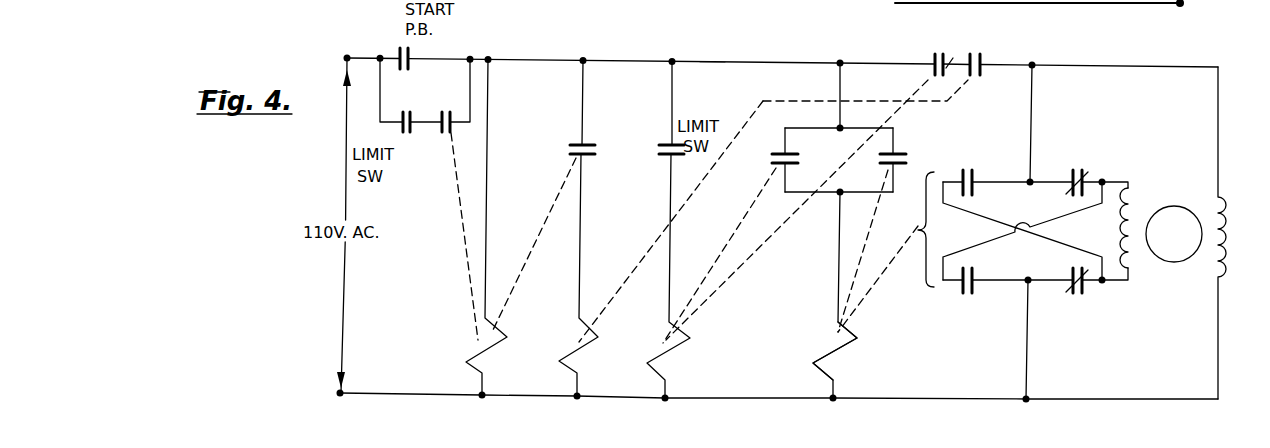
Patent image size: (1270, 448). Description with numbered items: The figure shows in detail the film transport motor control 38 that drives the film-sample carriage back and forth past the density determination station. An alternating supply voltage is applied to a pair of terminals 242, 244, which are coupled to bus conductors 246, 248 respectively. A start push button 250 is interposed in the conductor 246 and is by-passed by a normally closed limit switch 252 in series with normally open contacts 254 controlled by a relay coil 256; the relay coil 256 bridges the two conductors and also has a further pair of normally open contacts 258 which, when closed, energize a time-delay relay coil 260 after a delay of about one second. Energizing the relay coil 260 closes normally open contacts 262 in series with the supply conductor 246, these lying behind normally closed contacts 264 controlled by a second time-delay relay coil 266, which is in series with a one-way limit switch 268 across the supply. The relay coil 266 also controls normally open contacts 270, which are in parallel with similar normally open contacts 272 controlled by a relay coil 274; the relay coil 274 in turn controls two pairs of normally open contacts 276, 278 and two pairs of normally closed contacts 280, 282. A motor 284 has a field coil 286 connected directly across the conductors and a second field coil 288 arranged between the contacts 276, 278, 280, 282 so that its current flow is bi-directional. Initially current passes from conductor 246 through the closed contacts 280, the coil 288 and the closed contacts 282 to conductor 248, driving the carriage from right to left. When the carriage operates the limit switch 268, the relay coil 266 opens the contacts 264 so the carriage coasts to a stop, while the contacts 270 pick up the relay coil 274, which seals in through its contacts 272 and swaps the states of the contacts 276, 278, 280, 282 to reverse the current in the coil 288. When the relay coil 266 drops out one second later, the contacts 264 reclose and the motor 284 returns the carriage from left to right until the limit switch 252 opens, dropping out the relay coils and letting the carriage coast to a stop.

The film transport motor control 38 is at (711, 56).
The terminal 242 is at (345, 55).
The terminal 244 is at (337, 390).
The bus conductor 246 is at (615, 58).
The bus conductor 248 is at (722, 400).
The start push button 250 is at (411, 51).
The limit switch 252 is at (396, 134).
The normally open contacts 254 is at (441, 128).
The relay coil 256 is at (466, 362).
The normally open contacts 258 is at (575, 142).
The relay coil 260 is at (557, 362).
The normally open contacts 262 is at (982, 62).
The normally closed contacts 264 is at (930, 60).
The relay coil 266 is at (677, 351).
The limit switch 268 is at (662, 157).
The normally open contacts 270 is at (791, 153).
The normally open contacts 272 is at (901, 153).
The relay coil 274 is at (838, 352).
The normally open contacts 276 is at (975, 177).
The normally open contacts 278 is at (961, 290).
The normally closed contacts 280 is at (1088, 173).
The normally closed contacts 282 is at (1072, 288).
The motor 284 is at (1176, 200).
The field coil 286 is at (1224, 230).
The field coil 288 is at (1120, 238).